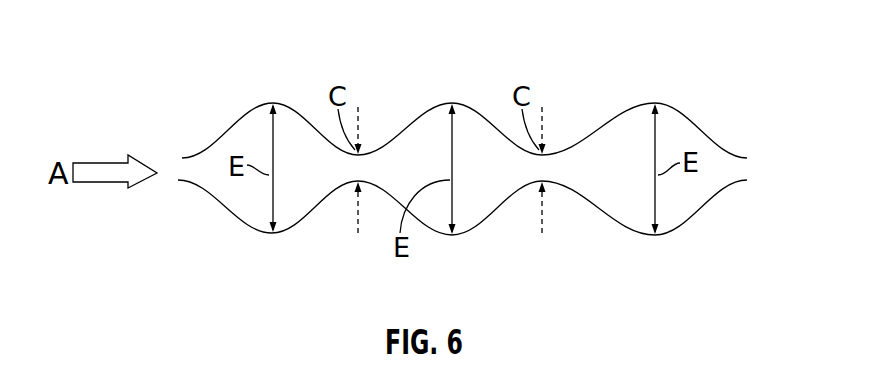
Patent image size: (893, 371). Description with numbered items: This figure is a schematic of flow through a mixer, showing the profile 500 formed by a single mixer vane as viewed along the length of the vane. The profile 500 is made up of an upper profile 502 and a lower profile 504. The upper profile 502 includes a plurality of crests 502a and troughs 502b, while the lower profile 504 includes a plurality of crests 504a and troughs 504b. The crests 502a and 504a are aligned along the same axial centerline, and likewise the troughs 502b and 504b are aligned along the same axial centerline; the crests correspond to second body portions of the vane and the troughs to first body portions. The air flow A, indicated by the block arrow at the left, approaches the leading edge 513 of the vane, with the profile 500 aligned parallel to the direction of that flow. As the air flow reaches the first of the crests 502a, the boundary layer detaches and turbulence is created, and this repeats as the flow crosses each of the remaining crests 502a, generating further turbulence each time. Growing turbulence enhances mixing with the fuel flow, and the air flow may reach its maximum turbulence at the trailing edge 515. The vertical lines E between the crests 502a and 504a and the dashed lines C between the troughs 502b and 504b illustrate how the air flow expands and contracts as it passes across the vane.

The profile 500 is at (201, 107).
The leading edge 513 is at (201, 145).
The upper profile 502 is at (237, 124).
The crests 502a is at (279, 103).
The troughs 502b is at (373, 150).
The lower profile 504 is at (688, 215).
The crests 504a is at (268, 235).
The troughs 504b is at (353, 184).
The trailing edge 515 is at (716, 127).